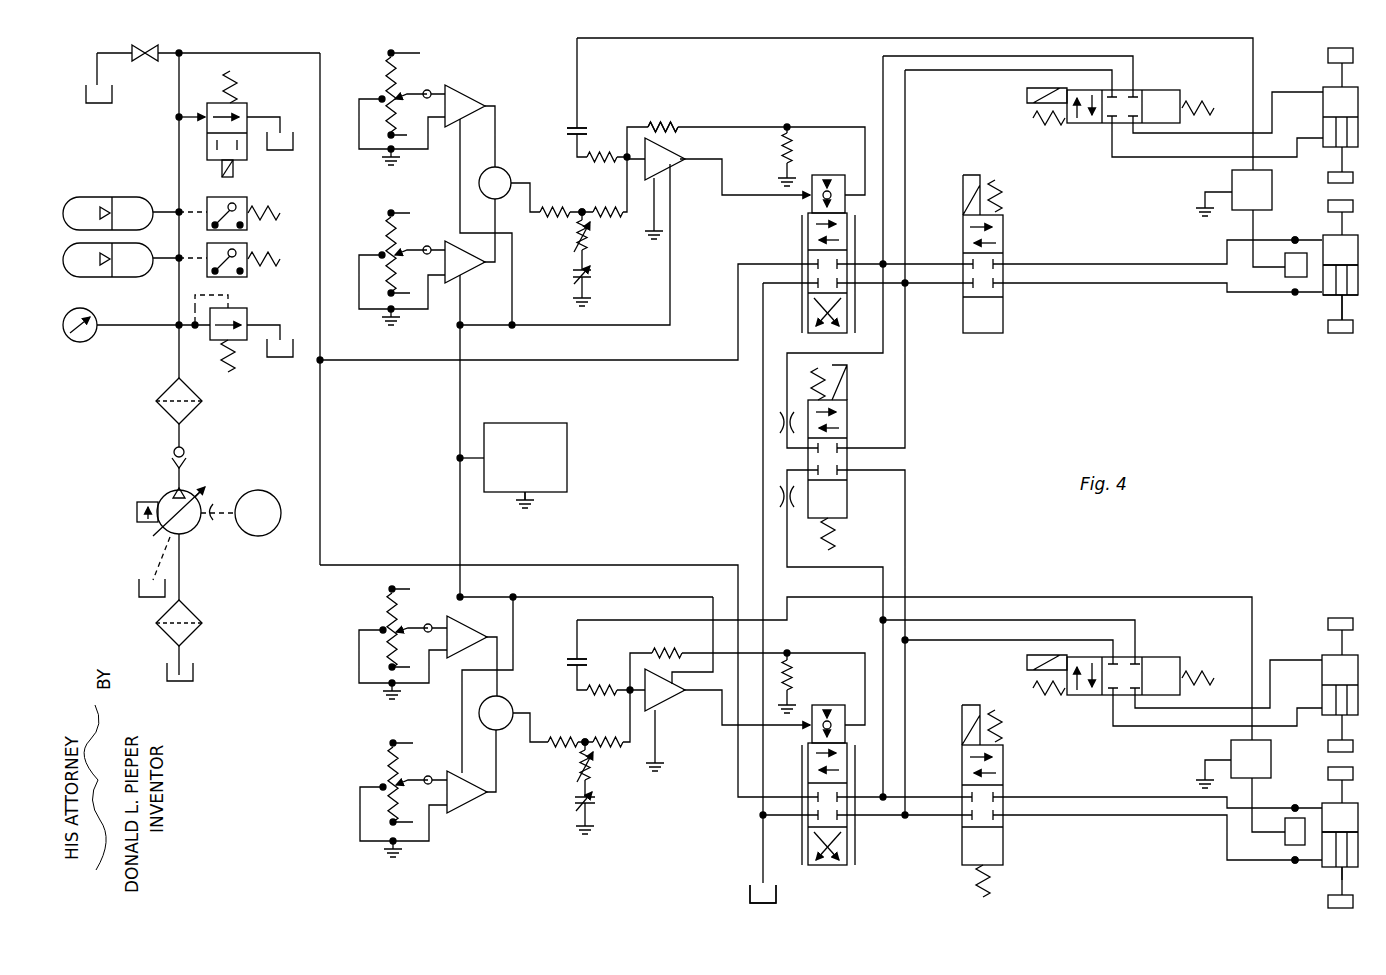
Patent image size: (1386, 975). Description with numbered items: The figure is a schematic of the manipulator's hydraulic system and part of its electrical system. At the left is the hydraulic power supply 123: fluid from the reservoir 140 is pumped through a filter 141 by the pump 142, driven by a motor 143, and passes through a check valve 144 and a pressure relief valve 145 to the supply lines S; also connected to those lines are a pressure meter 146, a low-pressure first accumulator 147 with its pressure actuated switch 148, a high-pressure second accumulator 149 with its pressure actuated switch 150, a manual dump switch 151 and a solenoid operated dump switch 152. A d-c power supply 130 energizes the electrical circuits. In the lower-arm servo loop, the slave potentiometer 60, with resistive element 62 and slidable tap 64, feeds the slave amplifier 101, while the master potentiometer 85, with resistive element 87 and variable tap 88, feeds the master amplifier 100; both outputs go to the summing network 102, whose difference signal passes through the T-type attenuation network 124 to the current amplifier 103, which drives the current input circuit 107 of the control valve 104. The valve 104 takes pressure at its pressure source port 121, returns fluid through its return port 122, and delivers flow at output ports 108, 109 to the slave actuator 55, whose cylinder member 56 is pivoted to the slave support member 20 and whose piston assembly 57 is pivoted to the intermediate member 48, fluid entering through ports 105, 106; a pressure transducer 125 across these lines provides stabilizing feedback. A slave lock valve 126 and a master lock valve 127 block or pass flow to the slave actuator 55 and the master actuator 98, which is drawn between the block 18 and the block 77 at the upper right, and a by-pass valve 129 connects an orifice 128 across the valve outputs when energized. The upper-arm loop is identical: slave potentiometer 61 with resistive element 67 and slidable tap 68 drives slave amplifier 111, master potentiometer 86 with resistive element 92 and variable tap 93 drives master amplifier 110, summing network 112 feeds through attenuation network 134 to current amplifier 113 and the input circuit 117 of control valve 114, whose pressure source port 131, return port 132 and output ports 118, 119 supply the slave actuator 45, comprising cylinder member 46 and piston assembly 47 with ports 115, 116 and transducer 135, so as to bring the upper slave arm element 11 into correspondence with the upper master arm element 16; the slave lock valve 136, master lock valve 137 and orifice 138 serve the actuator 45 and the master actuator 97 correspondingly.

The manual dump switch 151 is at (136, 48).
The solenoid operated dump or release switch 152 is at (247, 105).
The second accumulator 149 is at (130, 197).
The first accumulator 147 is at (138, 277).
The pressure actuated switch 150 is at (242, 197).
The pressure actuated switch 148 is at (248, 248).
The pressure relief valve 145 is at (247, 310).
The pressure meter 146 is at (82, 342).
The hydraulic power supply 123 is at (258, 414).
The check valve 144 is at (160, 410).
The pump 142 is at (160, 495).
The motor 143 is at (253, 536).
The filter 141 is at (194, 612).
The reservoir 140 is at (167, 668).
The lower slave arm potentiometer 60 is at (400, 72).
The resistive element 62 is at (388, 85).
The slidable tap 64 is at (417, 92).
The slave amplifier 101 is at (470, 95).
The summing network 102 is at (500, 170).
The lower master arm potentiometer 85 is at (400, 228).
The resistive element 87 is at (385, 242).
The variable tap 88 is at (415, 257).
The master amplifier 100 is at (460, 276).
The T-type attenuation network 124 is at (579, 197).
The current amplifier 103 is at (665, 139).
The d-c power supply 130 is at (567, 445).
The upper slave arm potentiometer 61 is at (395, 607).
The resistive element 67 is at (385, 617).
The slidable tap 68 is at (415, 633).
The slave amplifier 111 is at (450, 657).
The summing network 112 is at (505, 690).
The upper master arm potentiometer 86 is at (400, 760).
The resistive element 92 is at (385, 772).
The variable tap 93 is at (415, 777).
The master amplifier 110 is at (465, 807).
The T-type attenuation network 134 is at (581, 726).
The current amplifier 113 is at (658, 669).
The current input circuit 107 is at (810, 200).
The electrohydraulic fluid flow control valve 104 is at (794, 239).
The pressure source port 121 is at (815, 270).
The fluid return port 122 is at (815, 290).
The fluid output port 108 is at (845, 262).
The fluid output port 109 is at (847, 290).
The by-pass valve 129 is at (847, 420).
The orifice 128 is at (780, 425).
The orifice 138 is at (780, 495).
The slave lock valve 126 is at (1005, 250).
The master lock valve 127 is at (1150, 90).
The master actuator 98 is at (1323, 100).
The load block 18 is at (1328, 56).
The block 77 is at (1328, 178).
The slave support member 20 is at (1328, 205).
The lower slave arm actuator 55 is at (1323, 245).
The intermediate member 48 is at (1338, 333).
The piston assembly 57 is at (1343, 308).
The port 105 is at (1295, 240).
The pressure transducer 125 is at (1285, 270).
The cylinder member 56 is at (1323, 275).
The port 106 is at (1323, 290).
The current input circuit 117 is at (812, 733).
The electrohydraulic fluid flow control valve 114 is at (800, 757).
The pressure source port 131 is at (815, 800).
The fluid return port 132 is at (815, 818).
The fluid output port 118 is at (847, 795).
The fluid output port 119 is at (850, 820).
The slave lock valve 136 is at (1005, 760).
The master lock valve 137 is at (1150, 657).
The master actuator 97 is at (1358, 675).
The upper master arm element 16 is at (1362, 738).
The upper slave arm actuator 45 is at (1358, 825).
The upper slave arm element 11 is at (1328, 900).
The port 115 is at (1322, 808).
The pressure transducer 135 is at (1285, 835).
The port 116 is at (1322, 860).
The piston assembly 47 is at (1322, 880).
The cylinder member 46 is at (1358, 855).